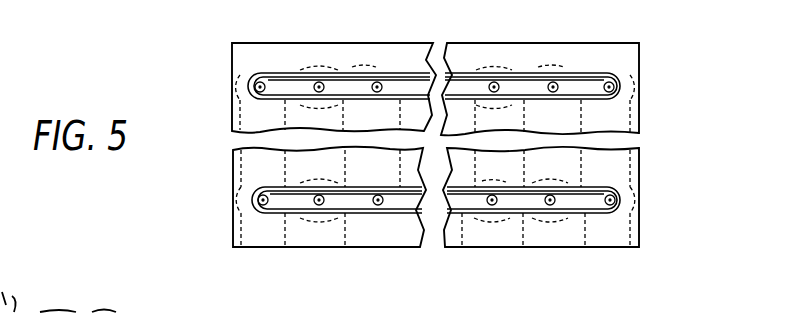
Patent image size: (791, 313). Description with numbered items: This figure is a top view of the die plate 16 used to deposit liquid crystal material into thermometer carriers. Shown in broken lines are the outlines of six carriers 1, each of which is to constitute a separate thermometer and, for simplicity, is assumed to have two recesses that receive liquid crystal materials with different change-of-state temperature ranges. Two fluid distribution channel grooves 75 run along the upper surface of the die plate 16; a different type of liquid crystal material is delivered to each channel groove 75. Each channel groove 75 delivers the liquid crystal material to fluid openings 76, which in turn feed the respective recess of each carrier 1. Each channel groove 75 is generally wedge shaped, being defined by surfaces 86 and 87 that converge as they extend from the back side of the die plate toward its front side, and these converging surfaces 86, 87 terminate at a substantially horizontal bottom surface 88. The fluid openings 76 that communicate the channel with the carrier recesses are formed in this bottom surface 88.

The carrier 1 is at (272, 64).
The die plate 16 is at (466, 43).
The channel groove 75 is at (288, 88).
The fluid opening 76 is at (257, 88).
The converging surface 86 is at (385, 78).
The converging surface 87 is at (350, 95).
The bottom surface 88 is at (507, 86).